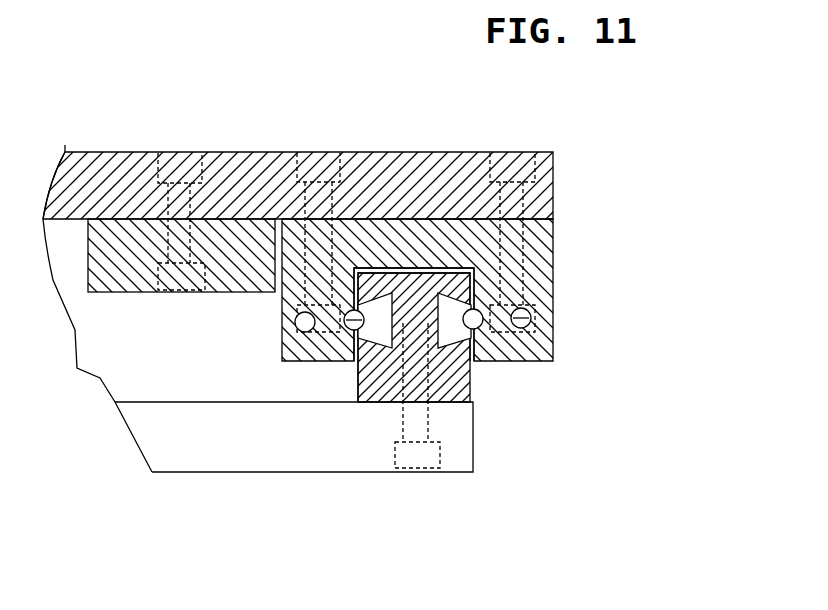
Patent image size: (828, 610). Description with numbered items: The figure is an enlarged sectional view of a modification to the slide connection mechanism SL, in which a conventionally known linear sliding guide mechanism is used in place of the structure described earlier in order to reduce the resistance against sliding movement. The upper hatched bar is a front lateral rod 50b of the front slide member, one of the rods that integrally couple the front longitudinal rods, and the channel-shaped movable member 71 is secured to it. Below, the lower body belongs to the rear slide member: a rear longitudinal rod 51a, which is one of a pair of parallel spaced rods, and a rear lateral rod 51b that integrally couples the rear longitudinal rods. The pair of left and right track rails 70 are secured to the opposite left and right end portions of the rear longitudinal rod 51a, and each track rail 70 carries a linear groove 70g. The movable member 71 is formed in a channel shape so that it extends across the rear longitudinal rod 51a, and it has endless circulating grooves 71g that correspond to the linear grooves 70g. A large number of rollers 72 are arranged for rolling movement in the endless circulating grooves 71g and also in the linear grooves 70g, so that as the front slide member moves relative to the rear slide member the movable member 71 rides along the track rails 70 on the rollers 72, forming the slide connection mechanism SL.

The front lateral rod 50b is at (242, 160).
The movable member 71 is at (556, 257).
The rollers 72 is at (354, 326).
The track rails 70 is at (446, 356).
The linear groove 70g is at (345, 314).
The endless circulating grooves 71g is at (475, 330).
The rear longitudinal rod 51a is at (358, 382).
The rear lateral rod 51b is at (238, 462).
The slide connection mechanism SL is at (614, 313).